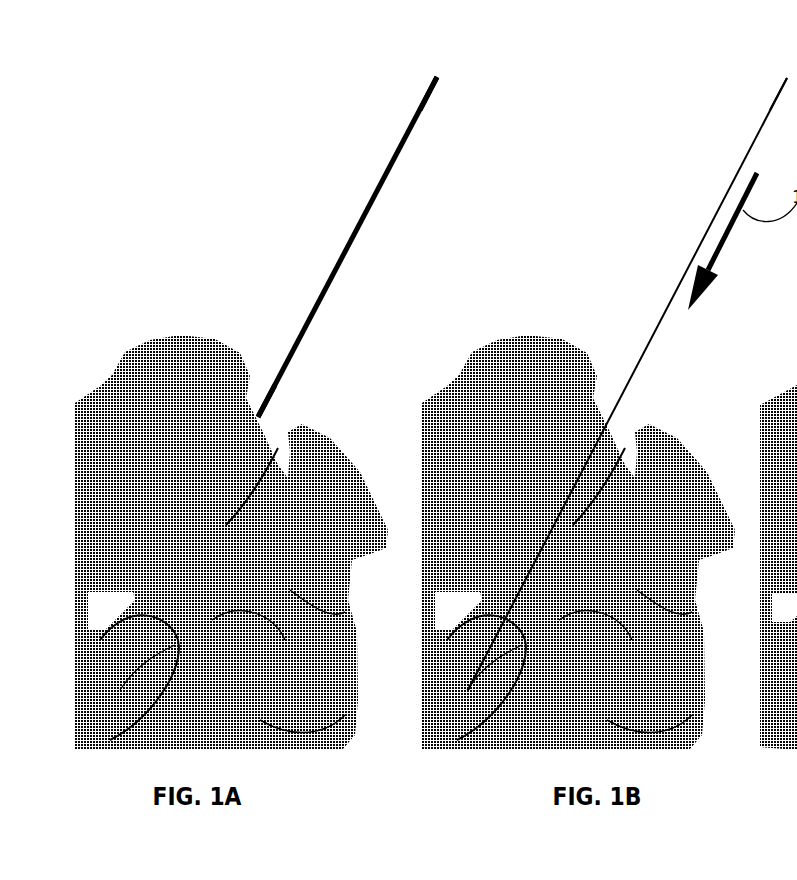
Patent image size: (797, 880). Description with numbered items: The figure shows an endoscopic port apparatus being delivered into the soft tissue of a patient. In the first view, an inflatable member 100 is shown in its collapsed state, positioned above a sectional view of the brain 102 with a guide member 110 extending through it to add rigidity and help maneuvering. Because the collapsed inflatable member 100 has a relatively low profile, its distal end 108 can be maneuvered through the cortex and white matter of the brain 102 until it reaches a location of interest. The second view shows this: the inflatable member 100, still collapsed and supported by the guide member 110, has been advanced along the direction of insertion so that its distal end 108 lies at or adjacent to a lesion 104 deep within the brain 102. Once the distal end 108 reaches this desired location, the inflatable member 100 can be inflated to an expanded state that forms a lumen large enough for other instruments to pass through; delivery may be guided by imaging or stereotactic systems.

In FIG. 1A, the inflatable member 100 is at (368, 195).
In FIG. 1B, the inflatable member 100 is at (645, 348).
In FIG. 1A, the brain 102 is at (137, 427).
In FIG. 1B, the brain 102 is at (627, 701).
In FIG. 1A, the lesion 104 is at (135, 657).
In FIG. 1B, the lesion 104 is at (472, 652).
In FIG. 1A, the distal end 108 is at (253, 417).
In FIG. 1B, the distal end 108 is at (469, 690).
In FIG. 1A, the guide member 110 is at (437, 76).
In FIG. 1B, the guide member 110 is at (787, 78).